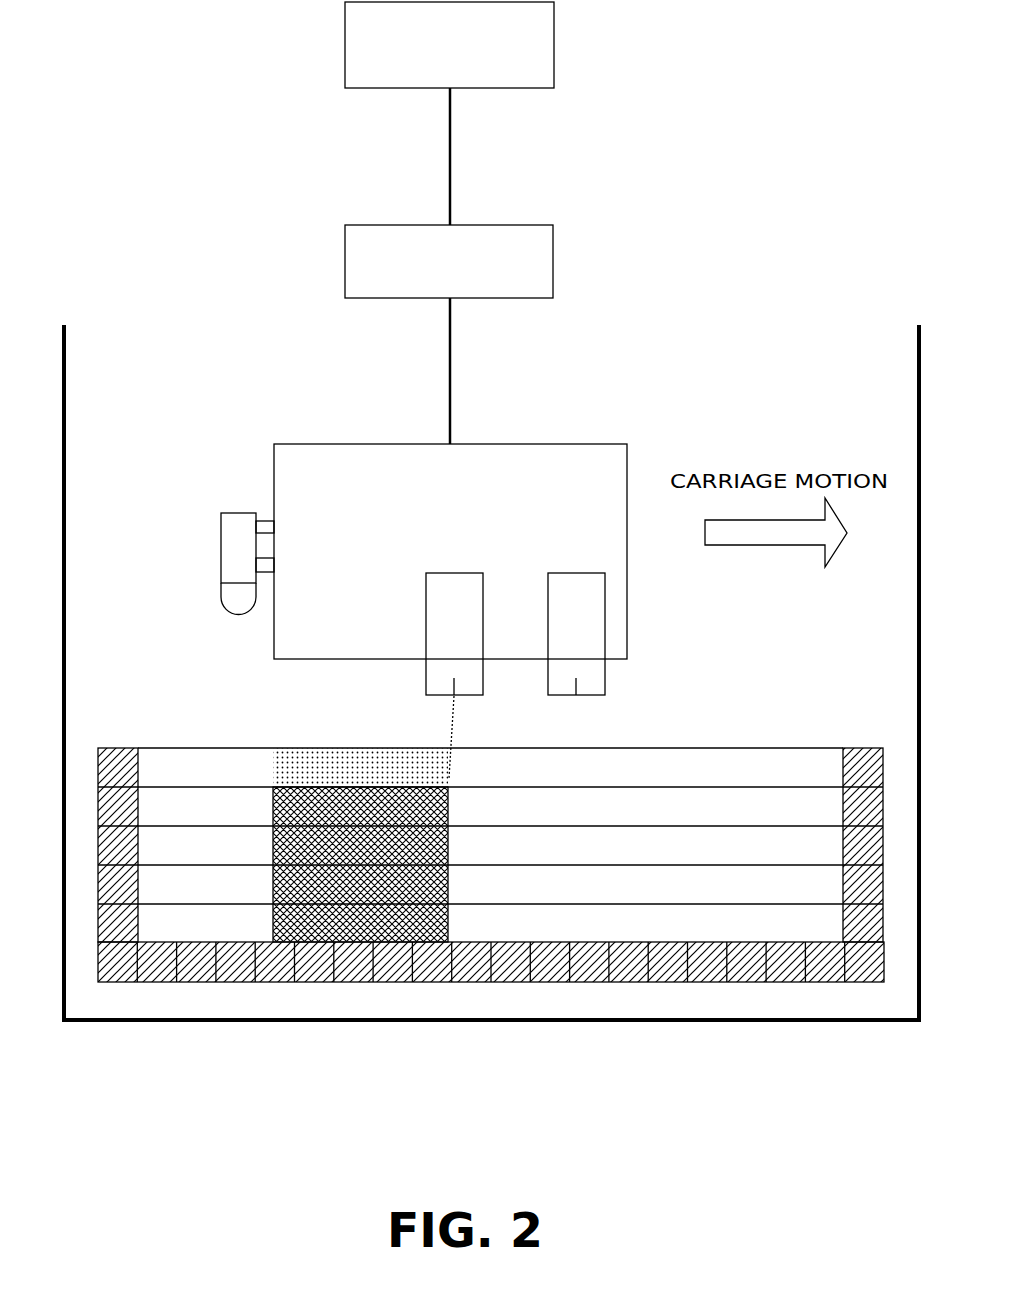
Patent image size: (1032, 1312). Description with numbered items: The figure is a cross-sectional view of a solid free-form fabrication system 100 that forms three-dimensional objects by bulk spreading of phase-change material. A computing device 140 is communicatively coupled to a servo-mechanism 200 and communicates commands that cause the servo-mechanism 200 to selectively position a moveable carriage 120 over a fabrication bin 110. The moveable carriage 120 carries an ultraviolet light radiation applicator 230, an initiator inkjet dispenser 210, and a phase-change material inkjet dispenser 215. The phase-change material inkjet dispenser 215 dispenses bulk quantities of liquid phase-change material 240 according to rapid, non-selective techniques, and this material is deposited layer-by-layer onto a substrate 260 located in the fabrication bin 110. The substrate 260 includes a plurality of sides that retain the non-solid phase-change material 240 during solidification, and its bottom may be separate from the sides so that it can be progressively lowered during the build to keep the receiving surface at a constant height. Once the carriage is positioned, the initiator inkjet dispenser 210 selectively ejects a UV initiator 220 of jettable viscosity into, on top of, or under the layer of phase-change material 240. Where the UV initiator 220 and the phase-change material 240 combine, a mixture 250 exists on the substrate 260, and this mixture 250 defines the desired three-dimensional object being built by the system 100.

The solid free-form fabrication system 100 is at (794, 164).
The fabrication bin 110 is at (110, 318).
The moveable carriage 120 is at (467, 494).
The computing device 140 is at (554, 43).
The servo-mechanism 200 is at (553, 262).
The initiator inkjet dispenser 210 is at (483, 607).
The phase-change material inkjet dispenser 215 is at (605, 633).
The UV initiator 220 is at (456, 727).
The ultraviolet light radiation applicator 230 is at (220, 547).
The phase-change material 240 is at (187, 752).
The mixture 250 is at (318, 752).
The substrate 260 is at (622, 1002).